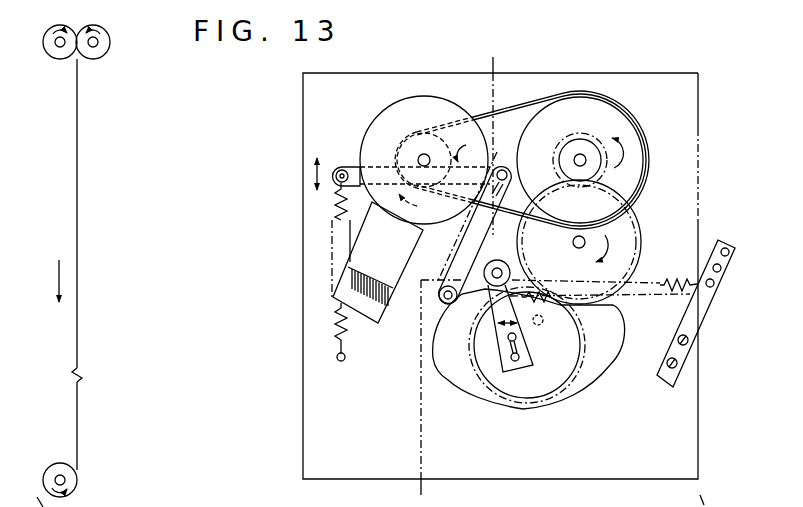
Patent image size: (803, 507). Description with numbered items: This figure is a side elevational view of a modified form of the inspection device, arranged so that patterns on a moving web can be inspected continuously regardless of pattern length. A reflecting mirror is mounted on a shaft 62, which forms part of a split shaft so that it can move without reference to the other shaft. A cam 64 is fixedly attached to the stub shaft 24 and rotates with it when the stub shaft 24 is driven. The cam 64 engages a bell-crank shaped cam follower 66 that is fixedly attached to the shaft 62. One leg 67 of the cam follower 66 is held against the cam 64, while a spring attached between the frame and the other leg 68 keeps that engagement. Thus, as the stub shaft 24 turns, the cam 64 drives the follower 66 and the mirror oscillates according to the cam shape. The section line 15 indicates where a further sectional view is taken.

The section line 15- 15 is at (493, 58).
The stub shaft 24 is at (568, 330).
The shaft 62 is at (498, 168).
The cam 64 is at (498, 395).
The cam follower 66 is at (464, 225).
The leg 67 is at (461, 262).
The leg 68 is at (356, 170).